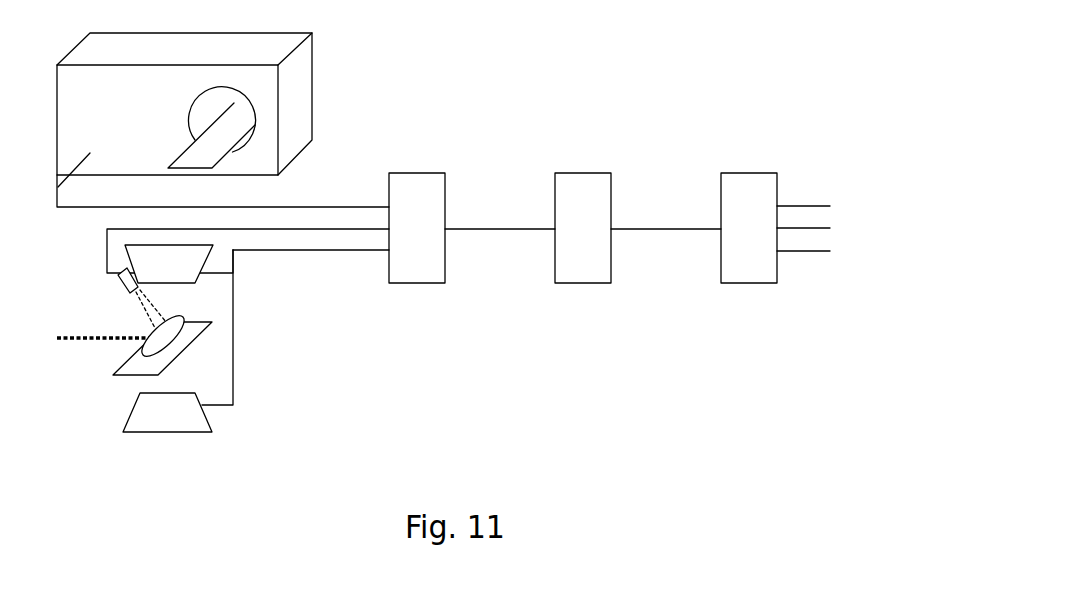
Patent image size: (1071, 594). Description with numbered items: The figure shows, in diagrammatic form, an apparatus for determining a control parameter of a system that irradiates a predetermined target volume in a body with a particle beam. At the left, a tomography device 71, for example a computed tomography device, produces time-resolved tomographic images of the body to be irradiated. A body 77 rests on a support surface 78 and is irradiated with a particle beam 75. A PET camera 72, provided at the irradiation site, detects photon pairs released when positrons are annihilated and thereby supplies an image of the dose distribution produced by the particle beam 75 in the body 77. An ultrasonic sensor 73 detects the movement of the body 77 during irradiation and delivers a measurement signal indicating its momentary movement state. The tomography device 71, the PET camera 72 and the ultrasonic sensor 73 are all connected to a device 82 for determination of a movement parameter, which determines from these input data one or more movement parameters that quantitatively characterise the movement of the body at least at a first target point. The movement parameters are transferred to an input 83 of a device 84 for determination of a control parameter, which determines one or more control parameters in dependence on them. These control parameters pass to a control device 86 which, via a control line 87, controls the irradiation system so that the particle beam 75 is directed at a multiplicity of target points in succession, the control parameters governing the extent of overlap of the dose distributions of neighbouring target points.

The tomography device 71 is at (307, 102).
The PET camera 72 is at (140, 257).
The ultrasonic sensor 73 is at (128, 278).
The particle beam 75 is at (102, 345).
The body 77 is at (173, 328).
The support surface 78 is at (157, 365).
The device for determination of a movement parameter 82 is at (428, 272).
The input of device 84 83 is at (550, 223).
The device for determination of a control parameter 84 is at (593, 272).
The control device 86 is at (760, 272).
The control line 87 is at (817, 206).